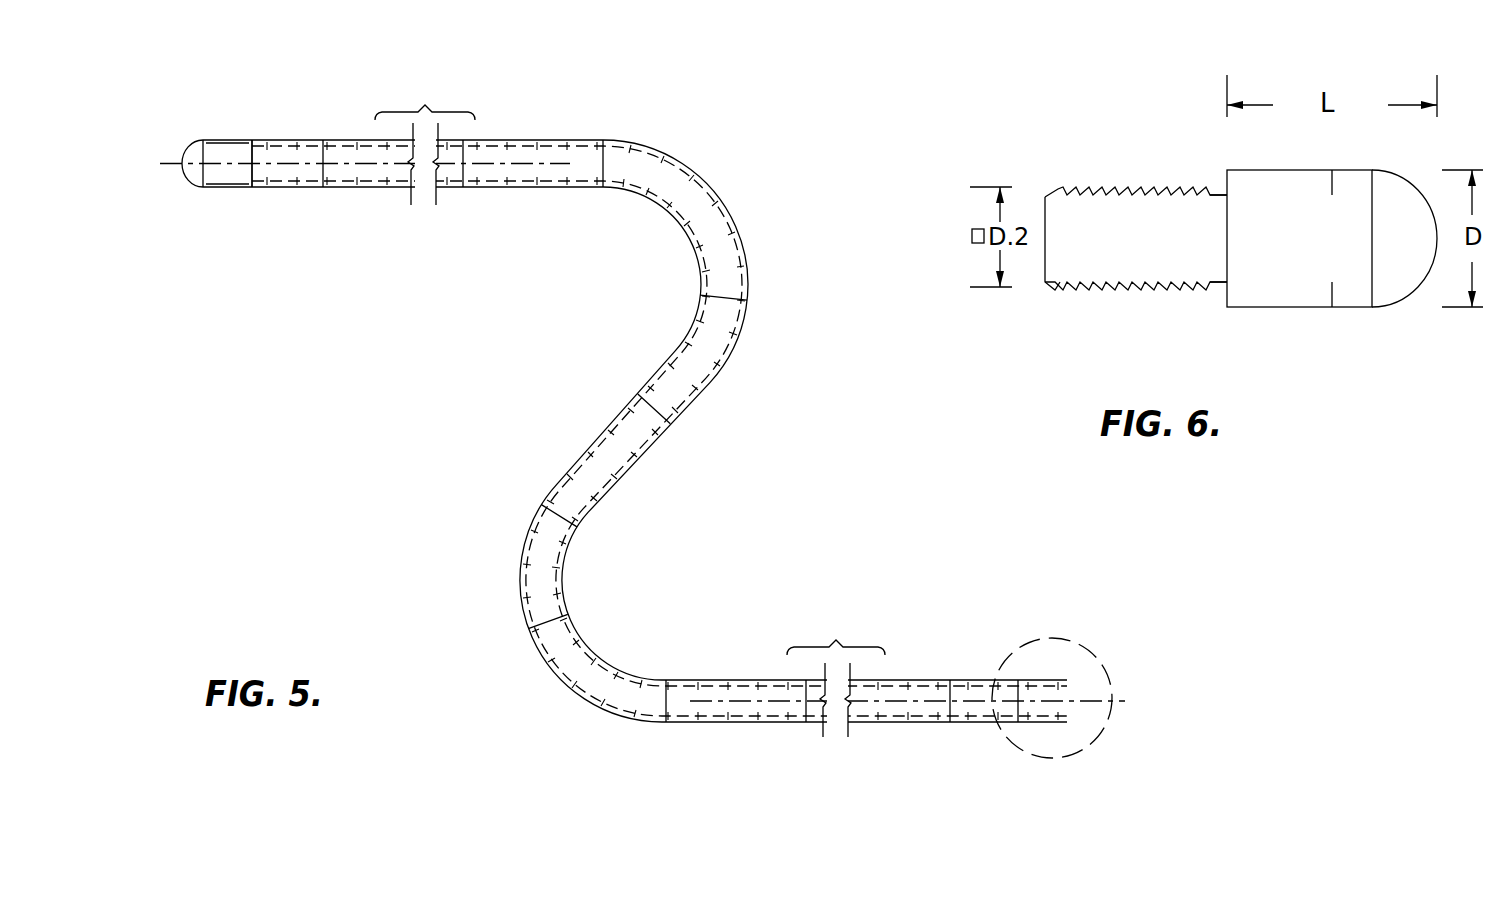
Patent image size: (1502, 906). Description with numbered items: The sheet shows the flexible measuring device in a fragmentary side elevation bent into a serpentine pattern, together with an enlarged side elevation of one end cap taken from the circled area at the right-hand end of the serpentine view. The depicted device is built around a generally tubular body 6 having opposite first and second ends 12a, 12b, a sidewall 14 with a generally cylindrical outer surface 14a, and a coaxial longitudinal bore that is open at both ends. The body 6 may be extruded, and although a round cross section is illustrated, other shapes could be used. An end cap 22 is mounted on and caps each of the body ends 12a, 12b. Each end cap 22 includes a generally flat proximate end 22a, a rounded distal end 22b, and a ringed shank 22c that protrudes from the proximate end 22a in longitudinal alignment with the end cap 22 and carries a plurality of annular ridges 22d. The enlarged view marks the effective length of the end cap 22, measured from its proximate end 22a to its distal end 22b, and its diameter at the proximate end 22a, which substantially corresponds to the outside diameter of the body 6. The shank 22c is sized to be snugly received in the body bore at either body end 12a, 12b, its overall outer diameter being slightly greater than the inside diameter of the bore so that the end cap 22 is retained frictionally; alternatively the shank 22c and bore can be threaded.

In FIG. 5, the sidewall 14 is at (635, 431).
In FIG. 5, the outer surface 14a is at (637, 462).
In FIG. 5, the first end 12a is at (381, 147).
In FIG. 5, the second end 12b is at (895, 682).
In FIG. 5, the end cap 22 is at (208, 189).
In FIG. 6, the end cap 22 is at (1092, 128).
In FIG. 5, the proximate end 22a is at (260, 189).
In FIG. 6, the proximate end 22a is at (1227, 307).
In FIG. 5, the distal end 22b is at (191, 139).
In FIG. 6, the distal end 22b is at (1418, 275).
In FIG. 6, the ringed shank 22c is at (1045, 283).
In FIG. 6, the annular ridges 22d is at (1201, 187).
In FIG. 5, the body 6 is at (1095, 657).